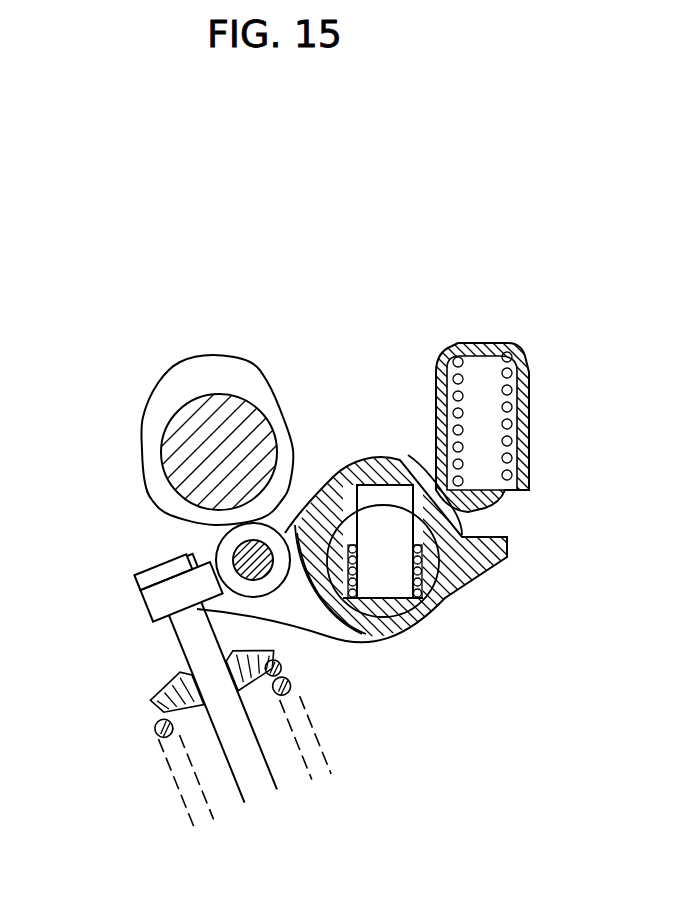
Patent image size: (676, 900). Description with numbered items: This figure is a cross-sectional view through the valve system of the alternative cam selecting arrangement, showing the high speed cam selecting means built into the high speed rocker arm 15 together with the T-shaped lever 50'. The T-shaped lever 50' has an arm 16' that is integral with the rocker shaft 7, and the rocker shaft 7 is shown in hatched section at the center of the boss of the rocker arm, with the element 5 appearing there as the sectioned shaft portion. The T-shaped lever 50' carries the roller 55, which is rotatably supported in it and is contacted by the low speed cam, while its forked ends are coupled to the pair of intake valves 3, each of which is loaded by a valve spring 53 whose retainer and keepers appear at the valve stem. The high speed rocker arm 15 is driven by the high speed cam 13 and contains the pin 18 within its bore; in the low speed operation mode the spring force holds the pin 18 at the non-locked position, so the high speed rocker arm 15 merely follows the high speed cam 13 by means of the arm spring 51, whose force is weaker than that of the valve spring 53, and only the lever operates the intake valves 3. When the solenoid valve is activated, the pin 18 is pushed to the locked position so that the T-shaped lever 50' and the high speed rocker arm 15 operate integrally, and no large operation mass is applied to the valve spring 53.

The intake valve 3 is at (253, 783).
The rocker shaft 5 is at (184, 430).
The rocker shaft 7 is at (425, 578).
The high speed cam 13 is at (222, 373).
The high speed rocker arm 15 is at (470, 573).
The arm 16' is at (160, 618).
The pin 18 is at (378, 523).
The T-shaped lever 50' is at (112, 577).
The arm spring 51 is at (483, 341).
The valve spring 53 is at (162, 737).
The roller 55 is at (217, 550).